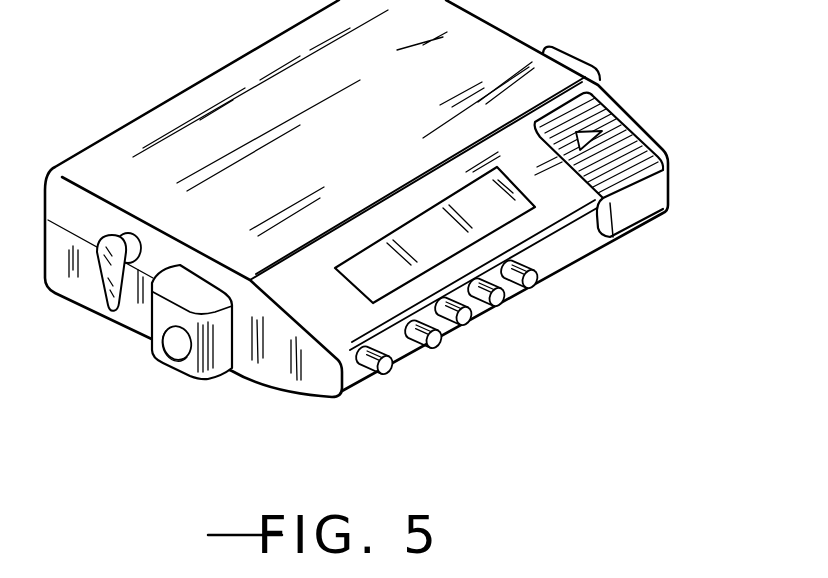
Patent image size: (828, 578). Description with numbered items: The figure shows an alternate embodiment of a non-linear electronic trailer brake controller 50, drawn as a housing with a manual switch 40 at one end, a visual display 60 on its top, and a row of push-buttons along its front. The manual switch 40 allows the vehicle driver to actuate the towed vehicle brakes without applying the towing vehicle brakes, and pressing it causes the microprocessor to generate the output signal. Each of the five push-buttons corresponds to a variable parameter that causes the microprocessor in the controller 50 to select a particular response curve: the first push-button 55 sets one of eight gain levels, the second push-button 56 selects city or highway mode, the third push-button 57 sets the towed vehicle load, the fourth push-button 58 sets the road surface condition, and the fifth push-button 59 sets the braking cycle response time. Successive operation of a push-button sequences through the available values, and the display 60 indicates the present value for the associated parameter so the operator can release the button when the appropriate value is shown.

The manual switch 40 is at (633, 211).
The non-linear electronic trailer brake controller 50 is at (483, 43).
The first push-button 55 is at (386, 378).
The second push-button 56 is at (439, 348).
The third push-button 57 is at (470, 327).
The fourth push-button 58 is at (502, 309).
The fifth push-button 59 is at (538, 283).
The visual display 60 is at (427, 232).